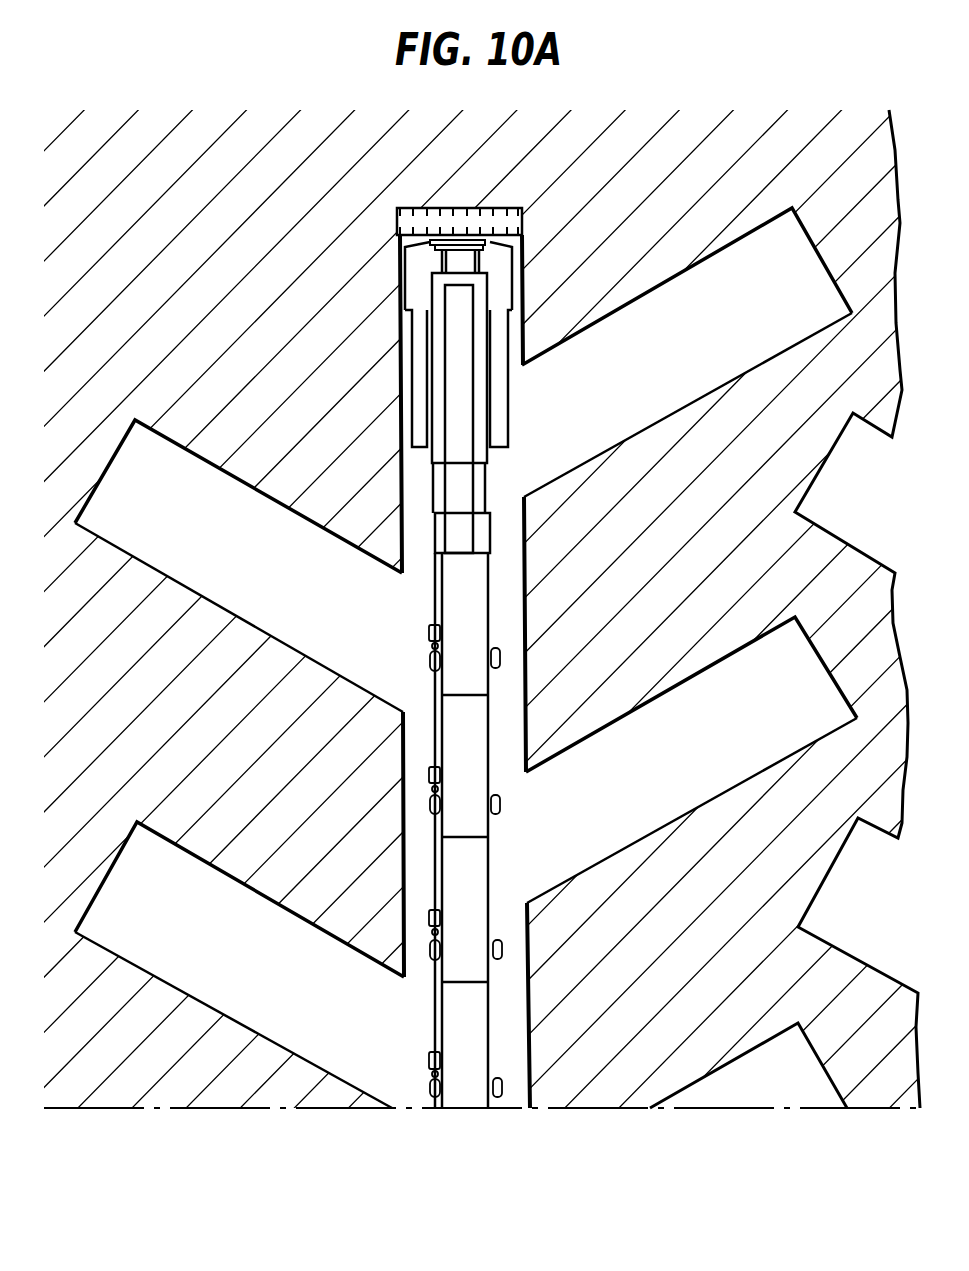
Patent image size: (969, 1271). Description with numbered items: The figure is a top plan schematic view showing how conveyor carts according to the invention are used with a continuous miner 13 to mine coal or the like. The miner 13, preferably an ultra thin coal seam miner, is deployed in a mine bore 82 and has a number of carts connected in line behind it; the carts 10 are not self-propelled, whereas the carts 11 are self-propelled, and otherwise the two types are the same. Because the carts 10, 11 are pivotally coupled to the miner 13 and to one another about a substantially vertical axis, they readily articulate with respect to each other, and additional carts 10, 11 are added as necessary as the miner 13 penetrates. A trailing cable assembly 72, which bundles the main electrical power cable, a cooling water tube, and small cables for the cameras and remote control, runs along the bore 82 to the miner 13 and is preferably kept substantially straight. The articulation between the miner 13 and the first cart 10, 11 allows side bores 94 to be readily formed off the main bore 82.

The conveyor cart 10 is at (492, 753).
The conveyor cart 11 is at (493, 604).
The continuous miner 13 is at (512, 427).
The trailing cable assembly 72 is at (432, 492).
The mine bore 82 is at (398, 998).
The side bore 94 is at (592, 729).